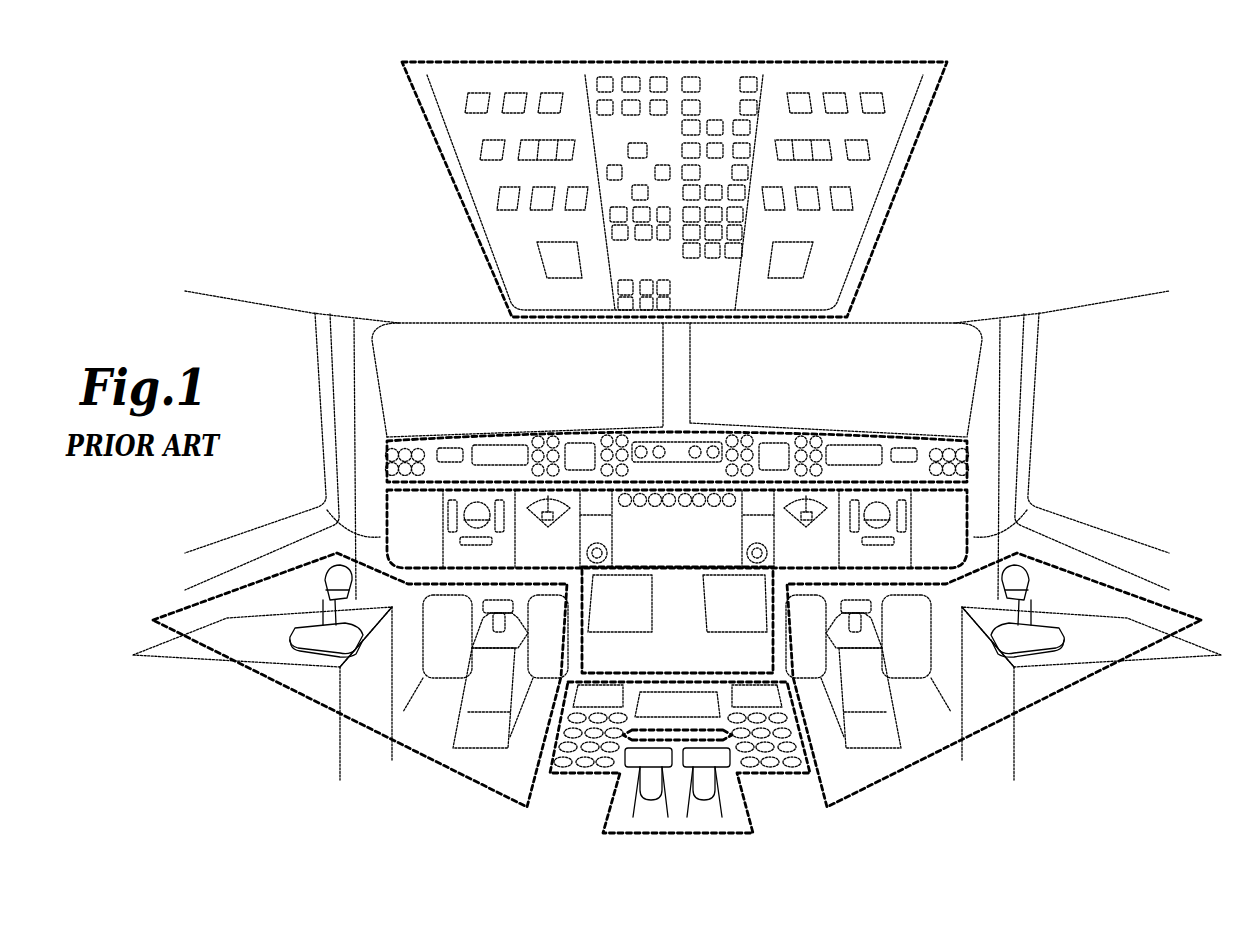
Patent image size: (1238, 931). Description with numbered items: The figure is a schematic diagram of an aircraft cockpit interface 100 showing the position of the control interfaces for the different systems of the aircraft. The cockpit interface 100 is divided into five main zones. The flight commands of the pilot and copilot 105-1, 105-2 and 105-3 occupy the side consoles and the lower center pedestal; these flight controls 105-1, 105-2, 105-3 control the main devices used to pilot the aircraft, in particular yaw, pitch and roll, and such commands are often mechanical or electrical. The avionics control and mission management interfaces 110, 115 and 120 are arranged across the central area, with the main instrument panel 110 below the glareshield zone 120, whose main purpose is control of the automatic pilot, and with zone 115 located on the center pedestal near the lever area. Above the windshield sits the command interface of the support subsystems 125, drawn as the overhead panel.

The cockpit interface 100 is at (1012, 212).
The flight commands of the pilot and copilot 105-1 is at (280, 683).
The flight commands of the pilot and copilot 105-2 is at (1067, 683).
The flight commands of the pilot and copilot 105-3 is at (610, 798).
The avionics control and mission management interface 110 is at (387, 508).
The avionics control and mission management interface 115 is at (773, 773).
The avionics control and mission management interface 120 is at (523, 440).
The command interface of the support subsystems 125 is at (443, 177).